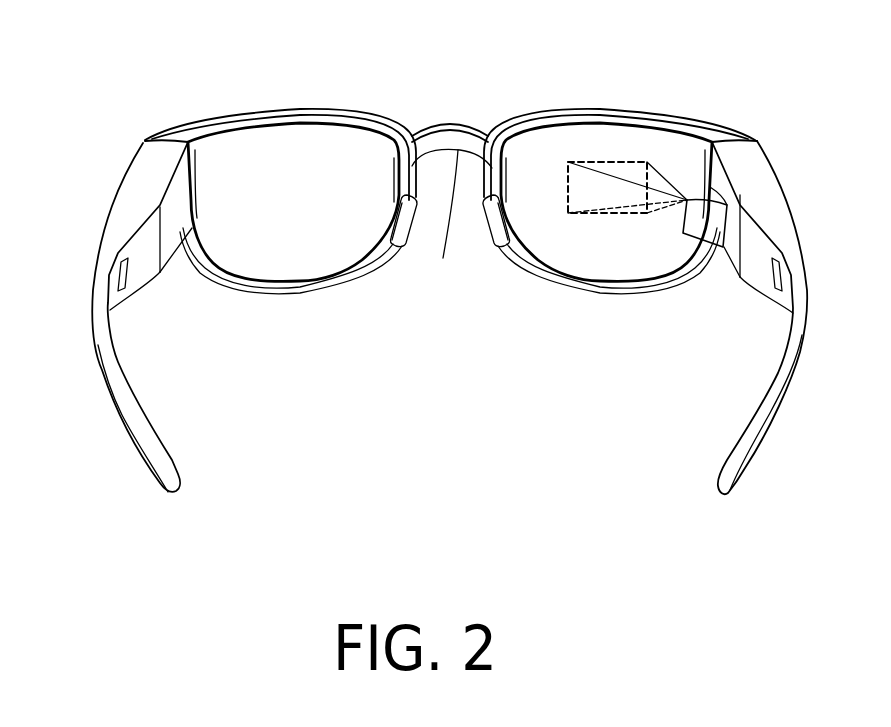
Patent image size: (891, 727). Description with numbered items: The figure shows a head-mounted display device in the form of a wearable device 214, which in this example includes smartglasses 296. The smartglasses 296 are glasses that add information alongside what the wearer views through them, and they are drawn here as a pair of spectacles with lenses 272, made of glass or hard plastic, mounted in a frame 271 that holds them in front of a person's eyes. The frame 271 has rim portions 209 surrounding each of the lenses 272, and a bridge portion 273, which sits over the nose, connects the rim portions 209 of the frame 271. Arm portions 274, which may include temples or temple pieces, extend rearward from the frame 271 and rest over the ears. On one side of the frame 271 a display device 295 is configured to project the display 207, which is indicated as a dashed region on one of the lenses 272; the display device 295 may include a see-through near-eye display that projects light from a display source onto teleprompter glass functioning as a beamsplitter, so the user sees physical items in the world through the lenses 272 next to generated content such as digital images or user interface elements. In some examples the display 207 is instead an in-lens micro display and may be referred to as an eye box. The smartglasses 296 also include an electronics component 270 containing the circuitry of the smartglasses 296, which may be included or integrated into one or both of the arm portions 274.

The wearable device 214 is at (166, 43).
The smartglasses 296 is at (91, 99).
The rim portions 209 is at (323, 120).
The display 207 is at (568, 163).
The frame 271 is at (593, 111).
The display device 295 is at (688, 199).
The bridge portion 273 is at (443, 258).
The lenses 272 is at (283, 252).
The electronics component 270 is at (740, 277).
The arm portions 274 is at (128, 419).